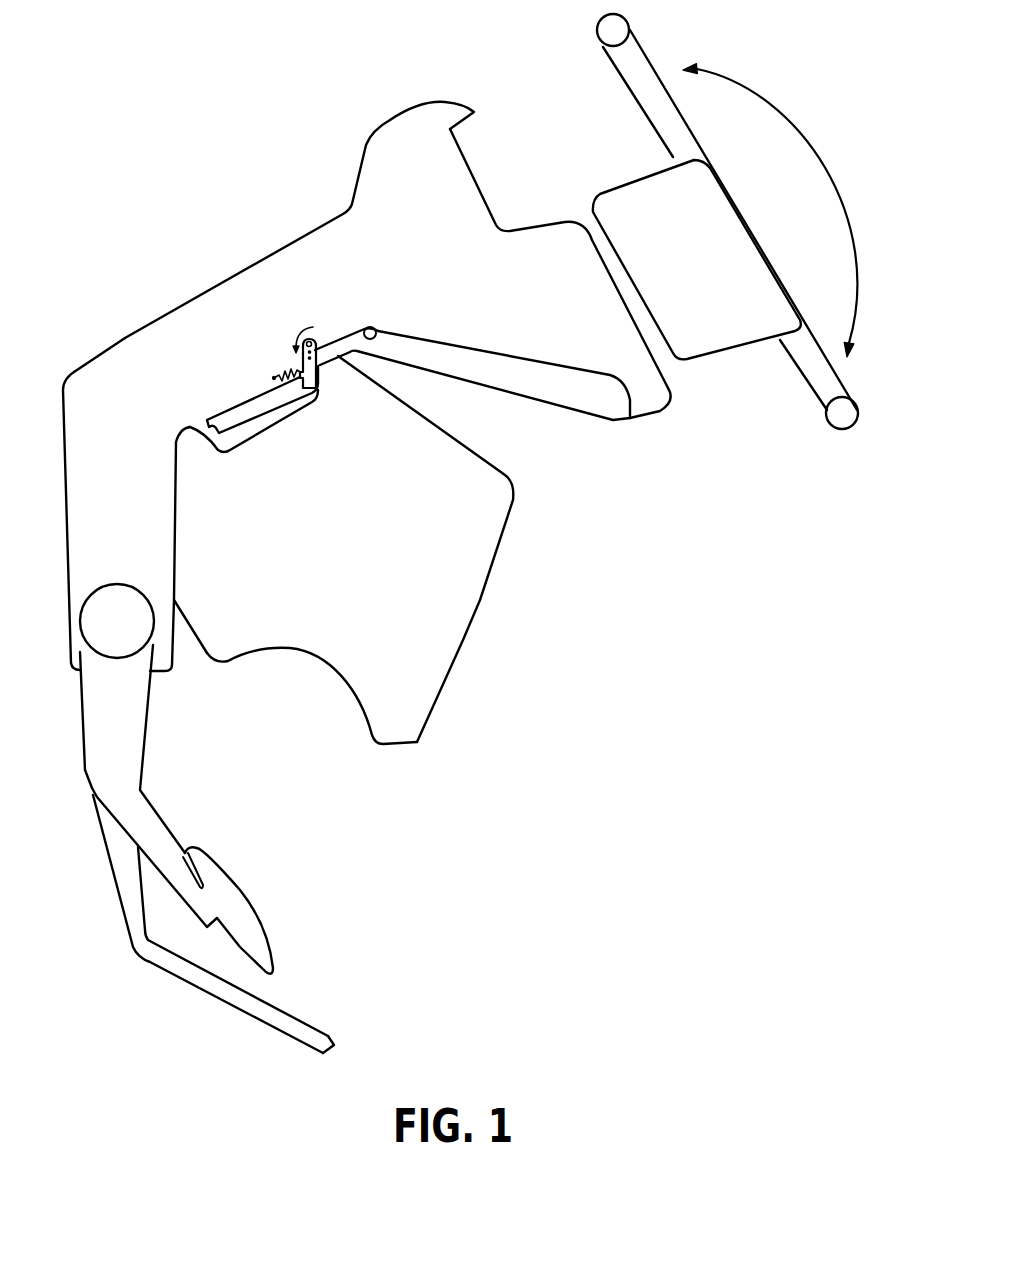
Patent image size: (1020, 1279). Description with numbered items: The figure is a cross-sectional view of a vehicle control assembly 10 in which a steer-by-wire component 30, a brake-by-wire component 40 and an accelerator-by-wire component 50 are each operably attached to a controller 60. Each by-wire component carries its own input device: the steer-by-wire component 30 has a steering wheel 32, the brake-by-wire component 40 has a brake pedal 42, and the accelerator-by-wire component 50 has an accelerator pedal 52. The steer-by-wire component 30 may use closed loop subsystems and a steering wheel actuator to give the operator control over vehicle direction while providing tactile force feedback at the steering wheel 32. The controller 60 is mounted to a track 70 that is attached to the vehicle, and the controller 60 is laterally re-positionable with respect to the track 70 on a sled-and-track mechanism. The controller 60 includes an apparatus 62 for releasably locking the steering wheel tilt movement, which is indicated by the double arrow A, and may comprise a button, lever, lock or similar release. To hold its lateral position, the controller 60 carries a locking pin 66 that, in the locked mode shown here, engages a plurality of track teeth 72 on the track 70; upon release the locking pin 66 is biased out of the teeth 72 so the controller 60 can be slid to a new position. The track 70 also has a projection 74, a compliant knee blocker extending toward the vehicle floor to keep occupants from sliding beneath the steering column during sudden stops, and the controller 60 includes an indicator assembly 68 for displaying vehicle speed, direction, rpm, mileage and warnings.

The vehicle control assembly 10 is at (211, 130).
The steer-by-wire component 30 is at (723, 374).
The steering wheel 32 is at (650, 95).
The brake-by-wire component 40 is at (216, 843).
The brake pedal 42 is at (225, 888).
The accelerator-by-wire component 50 is at (286, 994).
The accelerator pedal 52 is at (308, 1030).
The controller 60 is at (117, 326).
The apparatus for releasably locking steering wheel tilt movement 62 is at (636, 416).
The controller locking pin 66 is at (313, 393).
The indicator assembly 68 is at (437, 118).
The track 70 is at (488, 618).
The track teeth 72 is at (297, 383).
The projection 74 is at (405, 747).